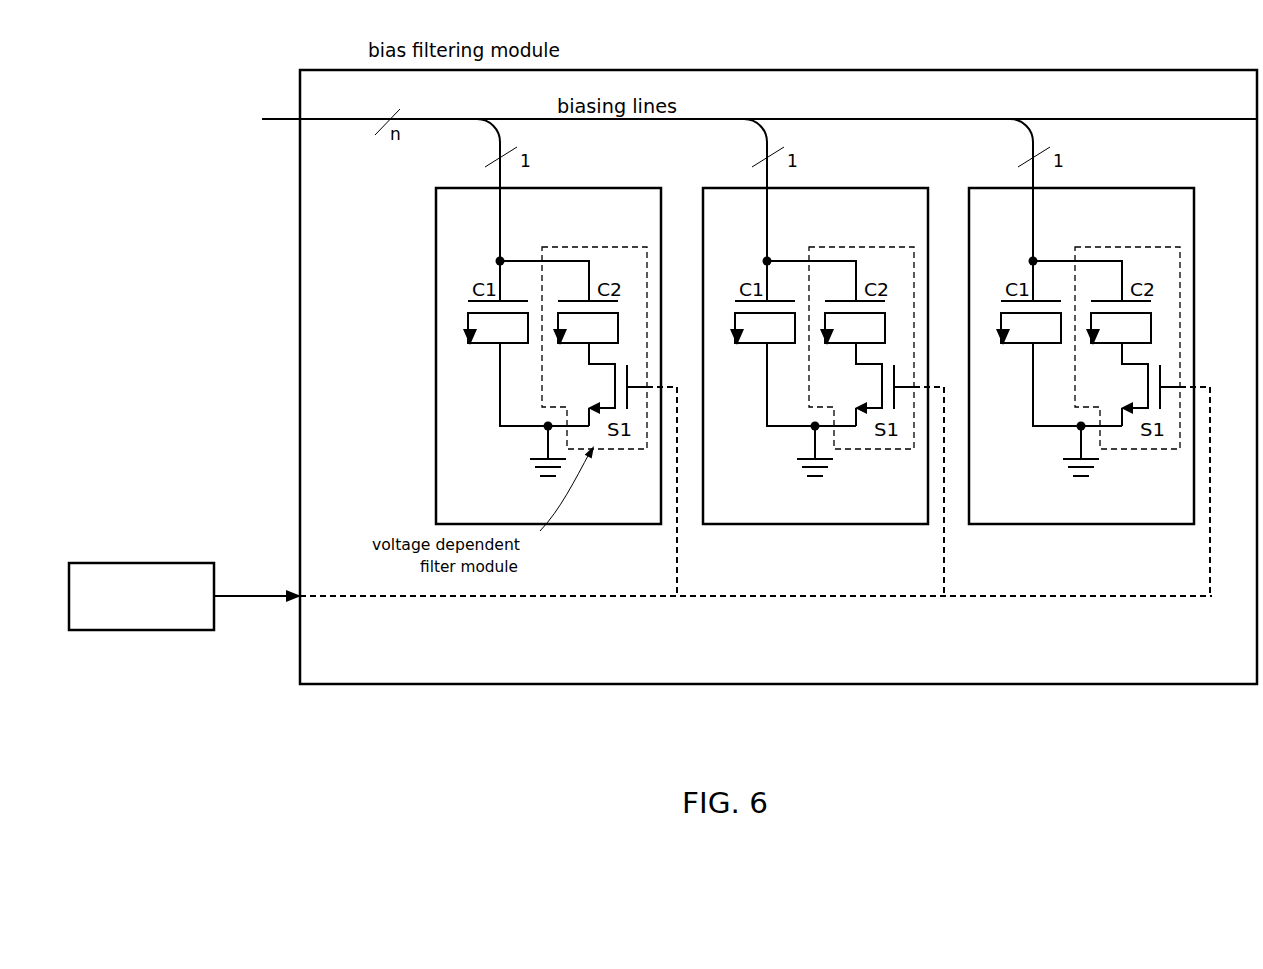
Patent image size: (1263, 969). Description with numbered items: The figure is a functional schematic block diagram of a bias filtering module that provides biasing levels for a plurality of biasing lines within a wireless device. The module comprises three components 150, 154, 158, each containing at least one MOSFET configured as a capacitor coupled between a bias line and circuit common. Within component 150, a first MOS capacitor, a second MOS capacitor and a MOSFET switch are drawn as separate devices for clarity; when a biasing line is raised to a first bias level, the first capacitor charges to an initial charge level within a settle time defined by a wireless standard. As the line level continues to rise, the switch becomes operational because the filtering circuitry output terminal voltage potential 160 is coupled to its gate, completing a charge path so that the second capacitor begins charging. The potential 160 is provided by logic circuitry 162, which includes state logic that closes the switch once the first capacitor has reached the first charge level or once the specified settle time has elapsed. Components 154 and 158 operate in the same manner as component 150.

The component 150 is at (556, 357).
The component 154 is at (823, 357).
The component 158 is at (1089, 357).
The filtering circuitry output terminal voltage potential 160 is at (243, 601).
The logic circuitry 162 is at (141, 596).